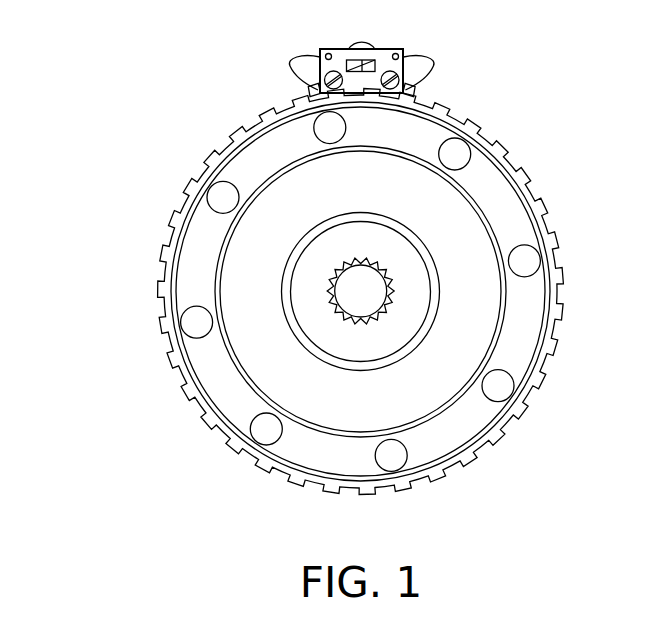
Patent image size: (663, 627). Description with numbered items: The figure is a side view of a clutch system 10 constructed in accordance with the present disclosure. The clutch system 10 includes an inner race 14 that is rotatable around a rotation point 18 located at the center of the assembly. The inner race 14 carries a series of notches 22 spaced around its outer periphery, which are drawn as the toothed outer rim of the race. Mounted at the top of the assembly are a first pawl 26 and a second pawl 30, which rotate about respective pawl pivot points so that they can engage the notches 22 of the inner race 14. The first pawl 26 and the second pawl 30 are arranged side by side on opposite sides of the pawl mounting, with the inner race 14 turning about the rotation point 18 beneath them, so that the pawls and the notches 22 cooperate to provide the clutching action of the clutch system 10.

The clutch system 10 is at (97, 122).
The inner race 14 is at (557, 294).
The rotation point 18 is at (362, 291).
The notches 22 is at (546, 204).
The first pawl 26 is at (308, 92).
The second pawl 30 is at (415, 92).